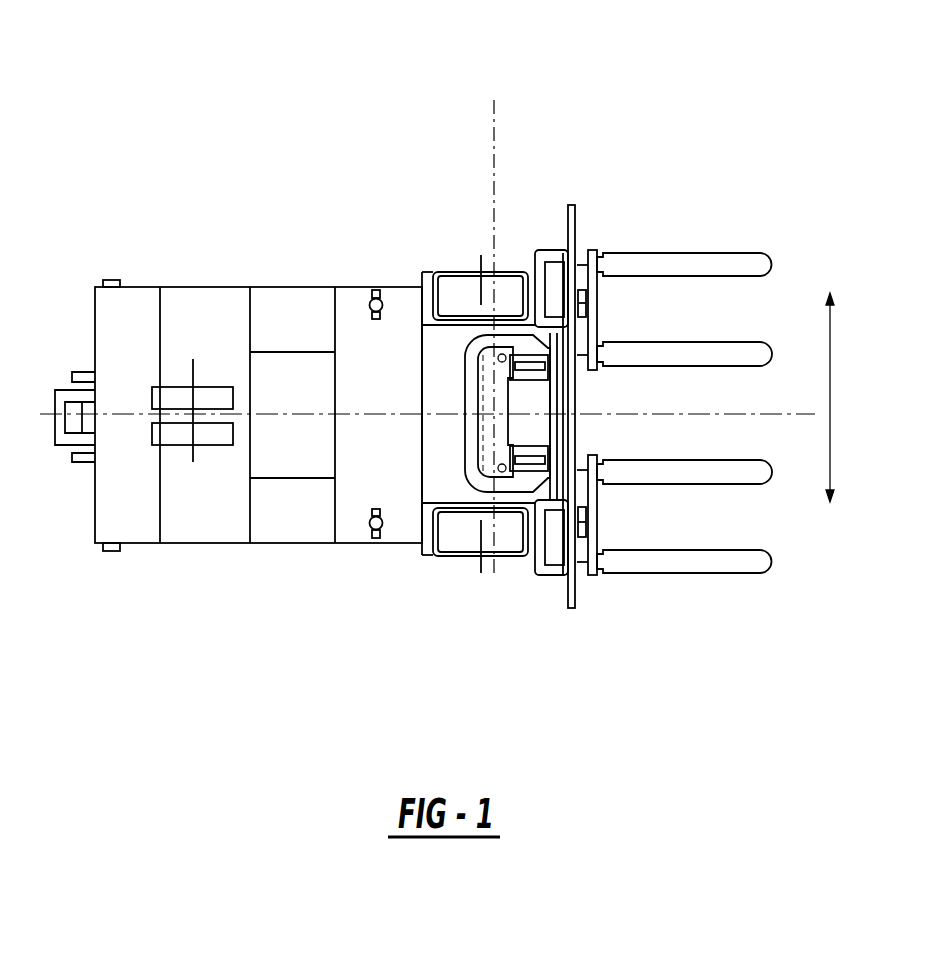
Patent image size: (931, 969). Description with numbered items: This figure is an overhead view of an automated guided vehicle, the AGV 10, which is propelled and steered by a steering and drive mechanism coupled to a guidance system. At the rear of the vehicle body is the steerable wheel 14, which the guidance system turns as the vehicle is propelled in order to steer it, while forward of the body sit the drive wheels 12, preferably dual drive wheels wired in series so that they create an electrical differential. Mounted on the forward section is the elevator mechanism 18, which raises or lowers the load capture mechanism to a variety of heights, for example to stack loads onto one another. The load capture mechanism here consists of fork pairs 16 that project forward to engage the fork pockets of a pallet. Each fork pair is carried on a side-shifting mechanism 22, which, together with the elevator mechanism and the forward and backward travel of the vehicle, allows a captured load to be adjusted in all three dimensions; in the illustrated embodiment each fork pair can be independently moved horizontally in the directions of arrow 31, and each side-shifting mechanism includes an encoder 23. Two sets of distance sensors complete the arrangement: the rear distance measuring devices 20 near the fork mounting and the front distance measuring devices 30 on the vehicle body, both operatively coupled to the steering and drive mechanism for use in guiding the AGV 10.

The AGV 10 is at (210, 140).
The drive wheels 12 is at (455, 288).
The steerable wheel 14 is at (212, 447).
The fork pairs 16 is at (727, 340).
The elevator mechanism 18 is at (503, 337).
The rear distance measuring devices 20 is at (584, 298).
The side-shifting mechanism 22 is at (560, 262).
The encoder 23 is at (542, 252).
The front distance measuring devices 30 is at (370, 291).
The arrow 31 is at (830, 386).